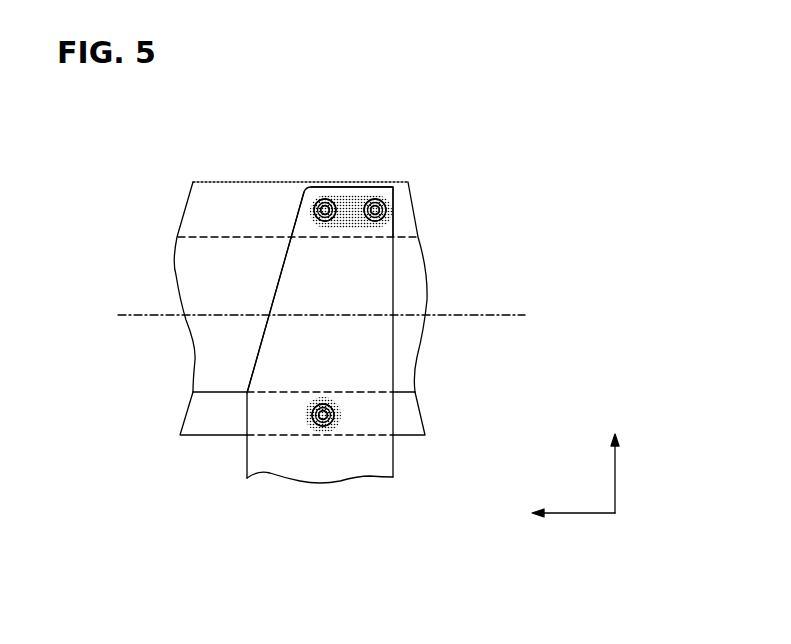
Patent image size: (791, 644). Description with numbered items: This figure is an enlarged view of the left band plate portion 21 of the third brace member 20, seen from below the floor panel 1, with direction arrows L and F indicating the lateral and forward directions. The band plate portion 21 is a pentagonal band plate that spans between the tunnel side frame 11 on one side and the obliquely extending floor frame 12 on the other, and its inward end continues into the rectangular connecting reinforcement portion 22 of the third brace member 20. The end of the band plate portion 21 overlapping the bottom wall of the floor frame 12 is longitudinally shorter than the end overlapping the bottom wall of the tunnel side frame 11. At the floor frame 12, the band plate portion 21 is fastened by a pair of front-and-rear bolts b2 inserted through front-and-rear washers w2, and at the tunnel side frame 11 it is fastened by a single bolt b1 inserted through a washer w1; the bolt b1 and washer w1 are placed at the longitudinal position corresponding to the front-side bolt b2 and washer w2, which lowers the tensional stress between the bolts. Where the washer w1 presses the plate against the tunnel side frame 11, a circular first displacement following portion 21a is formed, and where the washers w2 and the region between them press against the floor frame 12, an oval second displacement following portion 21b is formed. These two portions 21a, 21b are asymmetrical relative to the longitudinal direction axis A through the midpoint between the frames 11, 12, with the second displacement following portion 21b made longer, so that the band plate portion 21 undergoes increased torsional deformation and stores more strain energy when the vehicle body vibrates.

The floor panel 1 is at (182, 277).
The tunnel side frame 11 is at (203, 422).
The floor frame 12 is at (220, 190).
The third brace member 20 is at (350, 302).
The band plate portion 21 is at (283, 290).
The first displacement following portion 21a is at (337, 420).
The second displacement following portion 21b is at (390, 190).
The connecting reinforcement portion 22 is at (390, 467).
The bolt b1 is at (323, 404).
The bolts b2 is at (372, 221).
The washer w1 is at (323, 427).
The washers w2 is at (370, 199).
The longitudinal direction axis A is at (490, 314).
The left direction L is at (613, 467).
The front direction F is at (570, 515).